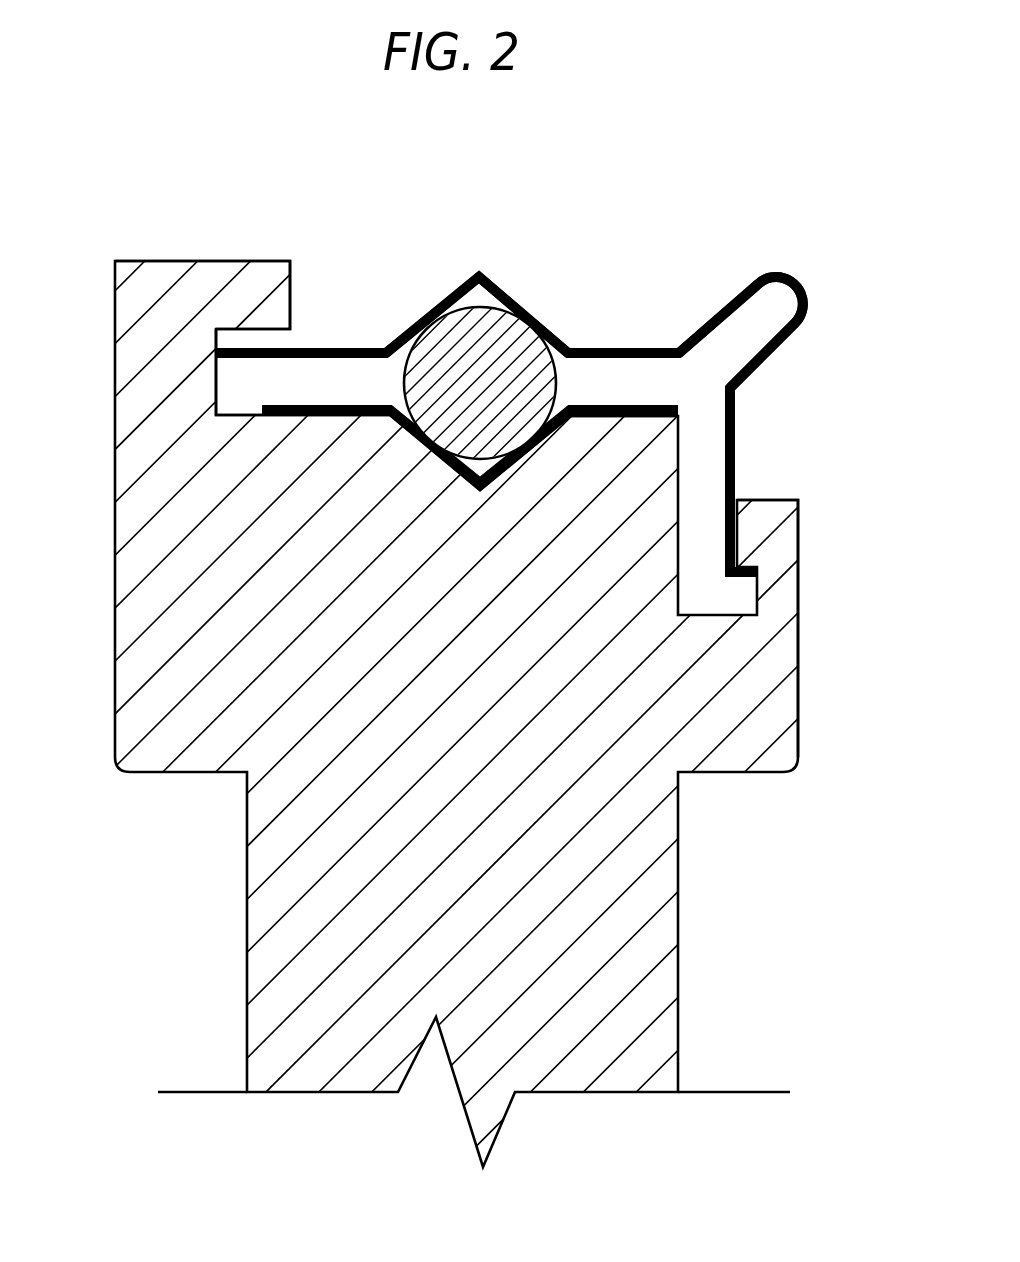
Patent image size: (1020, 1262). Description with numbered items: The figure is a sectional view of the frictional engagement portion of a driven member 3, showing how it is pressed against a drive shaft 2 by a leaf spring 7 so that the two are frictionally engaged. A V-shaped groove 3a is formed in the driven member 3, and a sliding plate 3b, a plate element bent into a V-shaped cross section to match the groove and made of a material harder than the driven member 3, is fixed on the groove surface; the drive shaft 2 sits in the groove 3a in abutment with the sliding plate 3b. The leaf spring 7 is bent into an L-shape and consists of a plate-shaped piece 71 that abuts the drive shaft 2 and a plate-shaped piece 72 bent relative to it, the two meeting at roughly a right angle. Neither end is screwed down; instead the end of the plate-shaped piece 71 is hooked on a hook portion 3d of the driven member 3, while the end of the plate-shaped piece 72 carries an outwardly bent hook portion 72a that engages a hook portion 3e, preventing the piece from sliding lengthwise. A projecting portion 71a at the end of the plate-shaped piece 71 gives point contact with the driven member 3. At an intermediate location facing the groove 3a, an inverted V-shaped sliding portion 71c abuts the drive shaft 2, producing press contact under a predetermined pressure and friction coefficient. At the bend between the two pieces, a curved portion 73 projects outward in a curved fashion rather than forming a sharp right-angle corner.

The drive shaft 2 is at (417, 386).
The driven member 3 is at (116, 584).
The groove 3a is at (455, 456).
The sliding plate 3b is at (297, 420).
The hook portion 3d is at (203, 283).
The hook portion 3e is at (799, 573).
The leaf spring 7 is at (342, 343).
The plate-shaped piece 71 is at (618, 347).
The projecting portion 71a is at (250, 340).
The sliding portion 71c is at (517, 300).
The plate-shaped piece 72 is at (737, 465).
The hook portion 72a is at (727, 580).
The curved portion 73 is at (783, 271).